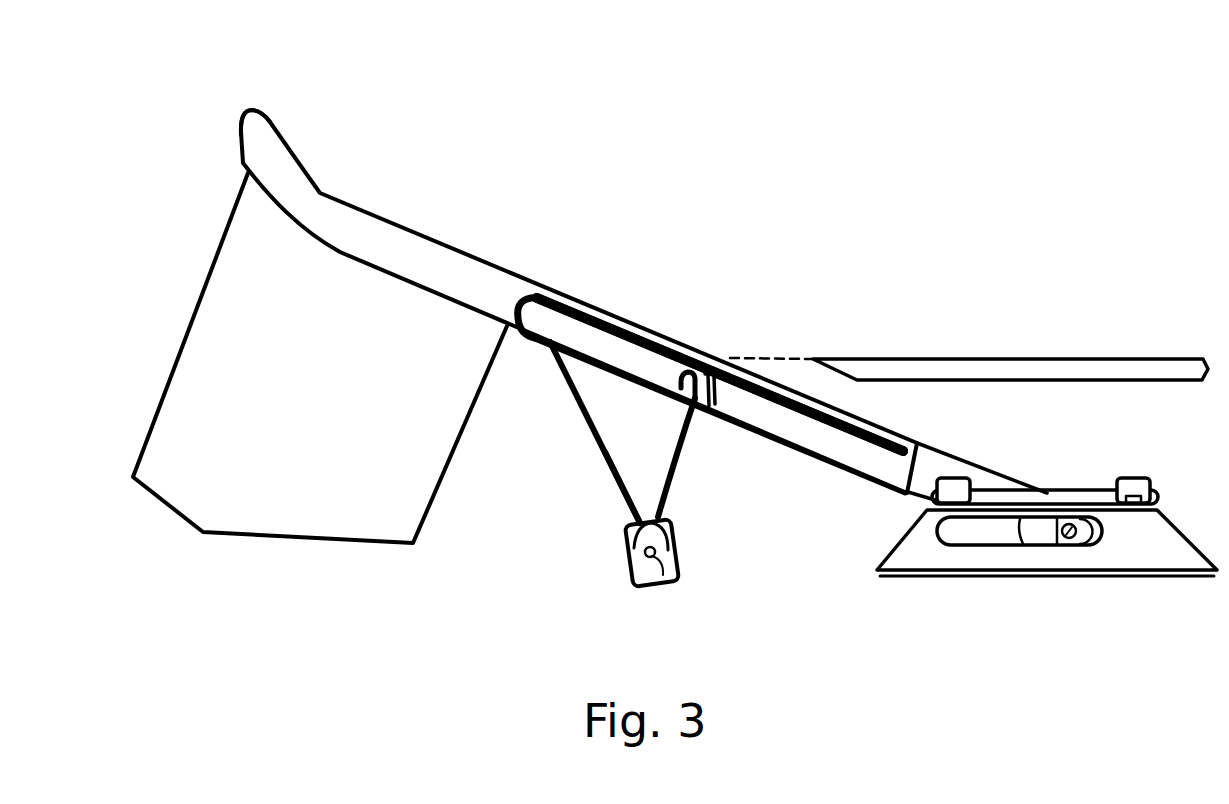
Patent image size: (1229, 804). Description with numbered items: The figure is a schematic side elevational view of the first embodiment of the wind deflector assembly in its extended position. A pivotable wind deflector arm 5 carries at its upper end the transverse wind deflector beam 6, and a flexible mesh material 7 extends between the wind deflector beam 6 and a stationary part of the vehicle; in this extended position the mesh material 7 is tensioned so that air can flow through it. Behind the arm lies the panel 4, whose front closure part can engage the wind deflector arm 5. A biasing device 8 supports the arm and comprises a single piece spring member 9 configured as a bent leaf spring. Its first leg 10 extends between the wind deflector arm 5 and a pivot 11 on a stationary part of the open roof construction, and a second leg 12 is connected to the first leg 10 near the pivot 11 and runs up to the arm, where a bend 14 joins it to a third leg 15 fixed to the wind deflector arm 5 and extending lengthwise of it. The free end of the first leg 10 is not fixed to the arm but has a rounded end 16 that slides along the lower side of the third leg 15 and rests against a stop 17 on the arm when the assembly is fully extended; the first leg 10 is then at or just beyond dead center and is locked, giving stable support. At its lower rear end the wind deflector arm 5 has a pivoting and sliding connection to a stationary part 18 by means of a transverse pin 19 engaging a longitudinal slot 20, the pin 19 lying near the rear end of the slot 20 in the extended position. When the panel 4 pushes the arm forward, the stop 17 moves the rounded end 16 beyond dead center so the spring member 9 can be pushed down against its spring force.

The panel 4 is at (1037, 370).
The wind deflector arm 5 is at (407, 250).
The wind deflector beam 6 is at (257, 127).
The mesh material 7 is at (205, 497).
The biasing device 8 is at (568, 588).
The spring member 9 is at (587, 435).
The first leg 10 is at (670, 470).
The pivot 11 is at (660, 580).
The second leg 12 is at (617, 483).
The bend 14 is at (523, 293).
The third leg 15 is at (612, 313).
The rounded end 16 is at (700, 353).
The stop 17 is at (730, 360).
The stationary part 18 is at (1140, 550).
The transverse pin 19 is at (1073, 527).
The longitudinal slot 20 is at (967, 537).